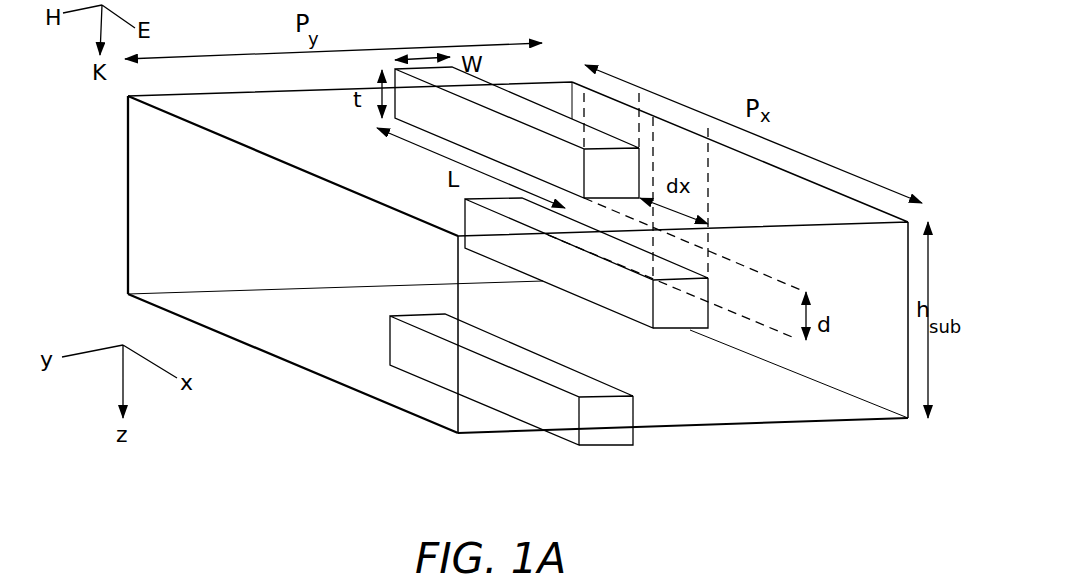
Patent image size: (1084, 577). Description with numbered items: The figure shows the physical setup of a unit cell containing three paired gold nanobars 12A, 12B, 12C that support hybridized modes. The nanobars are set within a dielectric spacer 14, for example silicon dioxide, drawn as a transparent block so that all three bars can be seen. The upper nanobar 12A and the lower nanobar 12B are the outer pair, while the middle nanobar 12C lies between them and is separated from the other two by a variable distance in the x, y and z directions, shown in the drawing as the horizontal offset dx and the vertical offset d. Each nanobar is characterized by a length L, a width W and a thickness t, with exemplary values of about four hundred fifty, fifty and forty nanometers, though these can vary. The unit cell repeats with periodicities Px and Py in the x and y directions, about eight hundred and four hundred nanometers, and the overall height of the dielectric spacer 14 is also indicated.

The dielectric spacer 14 is at (292, 369).
The gold nanobar 12A is at (512, 93).
The gold nanobar 12B is at (609, 446).
The middle gold nanobar 12C is at (680, 330).